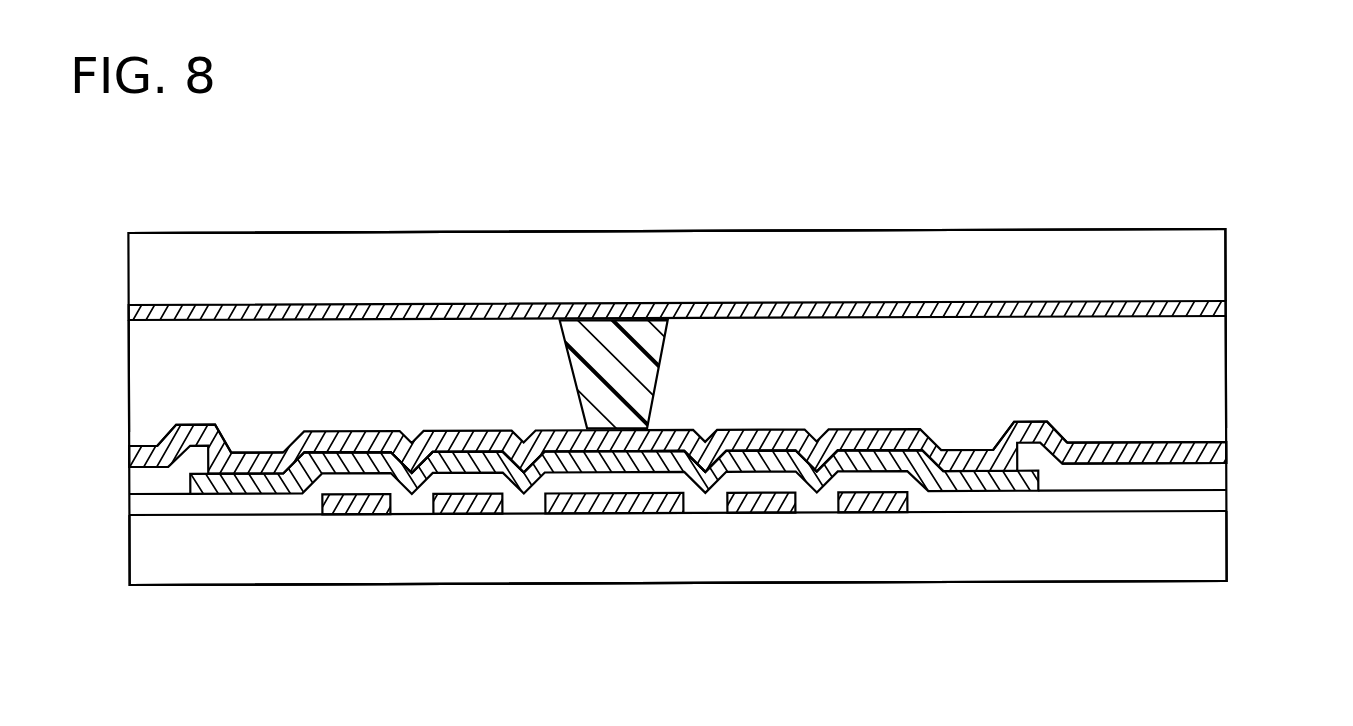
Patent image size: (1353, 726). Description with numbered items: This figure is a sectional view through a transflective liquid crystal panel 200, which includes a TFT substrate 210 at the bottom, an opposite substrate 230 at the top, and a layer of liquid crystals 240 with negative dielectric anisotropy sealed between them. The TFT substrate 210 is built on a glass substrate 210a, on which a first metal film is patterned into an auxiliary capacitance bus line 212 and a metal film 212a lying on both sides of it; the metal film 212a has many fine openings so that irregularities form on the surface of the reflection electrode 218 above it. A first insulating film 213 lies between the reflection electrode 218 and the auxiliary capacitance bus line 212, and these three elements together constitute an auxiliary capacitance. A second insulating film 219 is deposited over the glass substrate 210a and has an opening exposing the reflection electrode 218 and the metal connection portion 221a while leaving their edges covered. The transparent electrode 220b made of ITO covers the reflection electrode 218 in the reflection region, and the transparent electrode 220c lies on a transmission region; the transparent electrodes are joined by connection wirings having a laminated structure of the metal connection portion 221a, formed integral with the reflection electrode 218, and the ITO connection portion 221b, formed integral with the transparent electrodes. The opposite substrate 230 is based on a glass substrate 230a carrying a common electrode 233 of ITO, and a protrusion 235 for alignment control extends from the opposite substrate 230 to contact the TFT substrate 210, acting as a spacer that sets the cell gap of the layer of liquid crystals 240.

The liquid crystal panel 200 is at (1197, 204).
The TFT substrate 210 is at (122, 446).
The glass substrate 210a is at (1218, 569).
The auxiliary capacitance bus line 212 is at (610, 507).
The metal film 212a is at (373, 505).
The first insulating film 213 is at (1218, 501).
The reflection electrode 218 is at (760, 450).
The second insulating film 219 is at (1217, 478).
The transparent electrode 220b is at (468, 433).
The transparent electrode 220c is at (1140, 447).
The metal connection portion 221a is at (217, 487).
The ITO connection portion 221b is at (255, 456).
The opposite substrate 230 is at (122, 233).
The glass substrate 230a is at (1213, 273).
The common electrode 233 is at (1226, 311).
The protrusion 235 is at (660, 363).
The layer of liquid crystals 240 is at (141, 381).